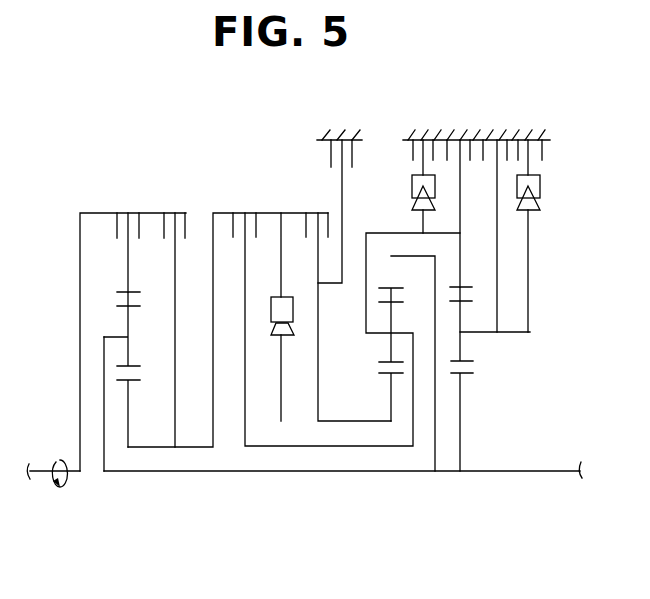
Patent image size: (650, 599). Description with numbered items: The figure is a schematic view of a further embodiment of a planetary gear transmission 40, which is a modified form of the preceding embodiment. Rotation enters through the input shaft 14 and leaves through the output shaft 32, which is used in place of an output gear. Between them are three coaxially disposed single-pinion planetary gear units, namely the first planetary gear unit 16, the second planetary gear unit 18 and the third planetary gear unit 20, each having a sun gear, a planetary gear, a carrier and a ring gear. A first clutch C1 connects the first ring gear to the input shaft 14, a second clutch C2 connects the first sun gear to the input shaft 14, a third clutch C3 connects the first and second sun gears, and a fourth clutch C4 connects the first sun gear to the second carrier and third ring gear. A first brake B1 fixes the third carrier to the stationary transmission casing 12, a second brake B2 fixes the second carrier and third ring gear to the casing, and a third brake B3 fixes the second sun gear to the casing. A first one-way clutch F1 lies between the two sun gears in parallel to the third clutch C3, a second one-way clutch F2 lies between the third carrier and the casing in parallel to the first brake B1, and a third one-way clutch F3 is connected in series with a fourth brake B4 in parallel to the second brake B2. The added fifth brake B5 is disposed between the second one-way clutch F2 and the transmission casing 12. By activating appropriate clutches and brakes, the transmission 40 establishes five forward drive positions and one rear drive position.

The planetary gear transmission 40 is at (140, 103).
The transmission casing 12 is at (343, 131).
The input shaft 14 is at (42, 471).
The first planetary gear unit 16 is at (142, 494).
The second planetary gear unit 18 is at (371, 492).
The third planetary gear unit 20 is at (474, 492).
The output shaft 32 is at (538, 468).
The first clutch C1 is at (117, 218).
The second clutch C2 is at (185, 220).
The third clutch C3 is at (306, 220).
The fourth clutch C4 is at (233, 220).
The first brake B1 is at (485, 149).
The second brake B2 is at (447, 149).
The third brake B3 is at (327, 155).
The fourth brake B4 is at (410, 153).
The fifth brake B5 is at (542, 150).
The first one-way clutch F1 is at (268, 275).
The second one-way clutch F2 is at (560, 196).
The third one-way clutch F3 is at (396, 197).